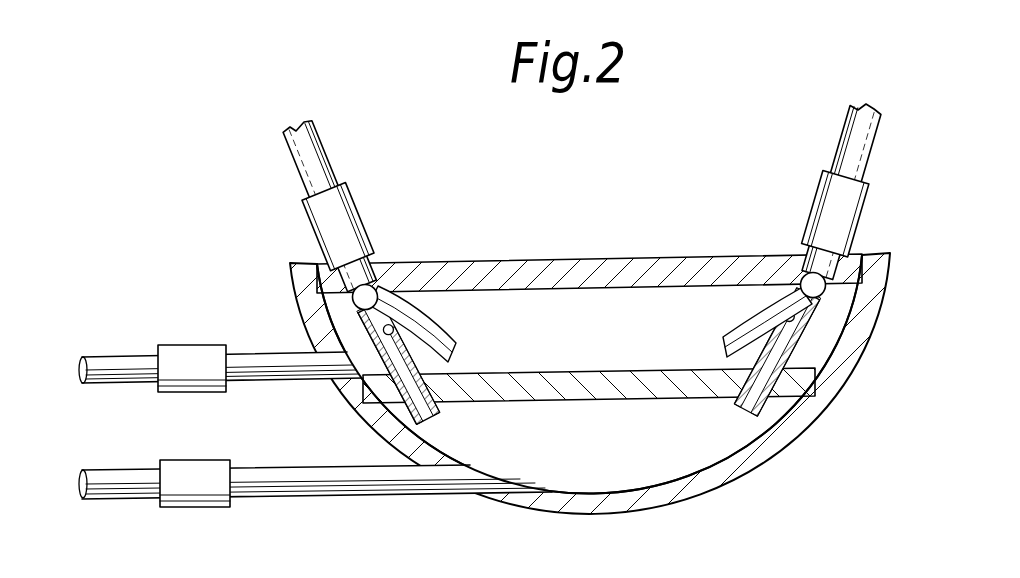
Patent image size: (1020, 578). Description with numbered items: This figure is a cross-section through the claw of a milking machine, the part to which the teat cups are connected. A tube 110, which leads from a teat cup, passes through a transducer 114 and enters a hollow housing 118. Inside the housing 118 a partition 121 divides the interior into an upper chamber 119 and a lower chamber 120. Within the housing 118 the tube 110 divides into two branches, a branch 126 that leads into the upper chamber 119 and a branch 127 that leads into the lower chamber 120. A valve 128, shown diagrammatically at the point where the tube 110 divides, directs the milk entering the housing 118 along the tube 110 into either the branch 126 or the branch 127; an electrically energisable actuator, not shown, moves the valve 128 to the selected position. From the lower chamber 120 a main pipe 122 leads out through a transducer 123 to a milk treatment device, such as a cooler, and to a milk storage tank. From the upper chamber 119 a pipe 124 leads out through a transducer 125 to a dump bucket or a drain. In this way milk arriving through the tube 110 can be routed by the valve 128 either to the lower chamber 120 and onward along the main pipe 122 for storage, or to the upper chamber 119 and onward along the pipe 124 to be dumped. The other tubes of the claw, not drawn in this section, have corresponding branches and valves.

The tube 110 is at (320, 145).
The transducer 114 is at (308, 218).
The hollow housing 118 is at (547, 244).
The upper chamber 119 is at (603, 343).
The lower chamber 120 is at (612, 460).
The partition 121 is at (643, 370).
The main pipe 122 is at (302, 490).
The transducer 123 is at (206, 499).
The pipe 124 is at (261, 356).
The transducer 125 is at (172, 355).
The branch 126 is at (437, 328).
The branch 127 is at (437, 419).
The valve 128 is at (394, 263).